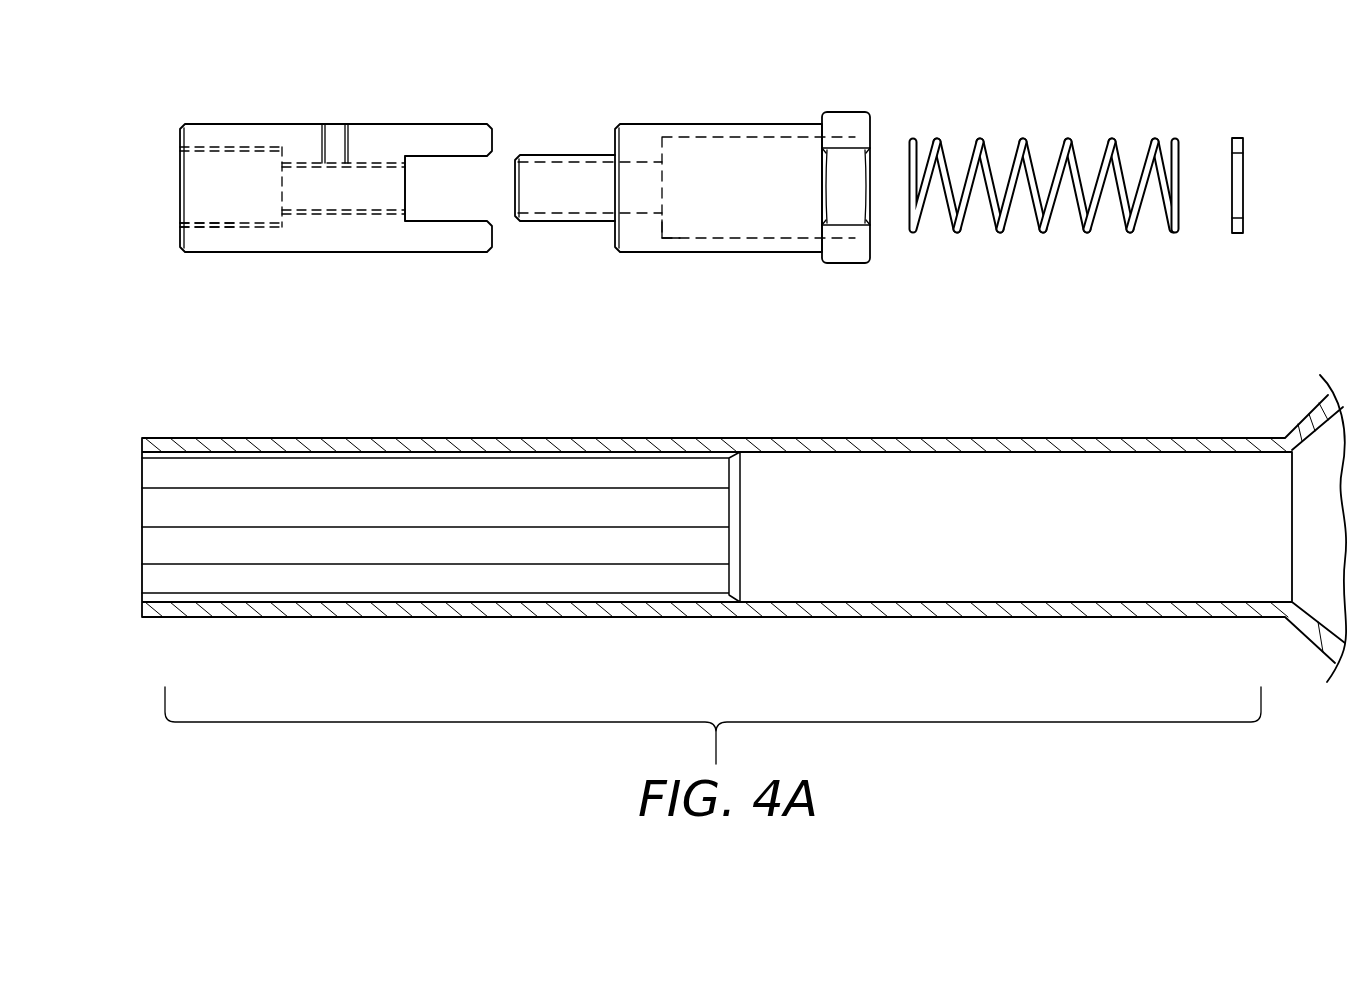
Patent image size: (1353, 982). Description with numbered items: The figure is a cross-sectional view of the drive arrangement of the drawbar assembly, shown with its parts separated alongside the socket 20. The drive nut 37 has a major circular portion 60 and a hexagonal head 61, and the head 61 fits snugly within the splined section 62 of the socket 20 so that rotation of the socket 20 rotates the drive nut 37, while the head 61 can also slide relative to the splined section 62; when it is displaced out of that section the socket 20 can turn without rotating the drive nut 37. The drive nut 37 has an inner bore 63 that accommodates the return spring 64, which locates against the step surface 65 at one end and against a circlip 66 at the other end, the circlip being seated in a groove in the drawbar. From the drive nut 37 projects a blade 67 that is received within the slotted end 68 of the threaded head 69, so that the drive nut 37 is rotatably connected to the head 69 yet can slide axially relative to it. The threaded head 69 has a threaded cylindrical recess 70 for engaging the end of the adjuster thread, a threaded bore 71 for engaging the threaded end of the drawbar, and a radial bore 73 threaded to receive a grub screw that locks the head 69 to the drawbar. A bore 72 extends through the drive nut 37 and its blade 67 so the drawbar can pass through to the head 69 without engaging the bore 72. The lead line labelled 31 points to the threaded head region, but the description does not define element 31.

The socket 20 is at (862, 435).
The bore 31 is at (210, 223).
The drive nut 37 is at (689, 196).
The major circular portion 60 is at (682, 122).
The hexagonal head 61 is at (853, 112).
The splined section 62 is at (438, 472).
The inner bore 63 is at (783, 160).
The return spring 64 is at (1063, 138).
The step surface 65 is at (663, 225).
The circlip 66 is at (1238, 138).
The blade 67 is at (602, 220).
The slotted end 68 is at (462, 210).
The threaded head 69 is at (250, 253).
The threaded cylindrical recess 70 is at (262, 175).
The threaded bore 71 is at (357, 197).
The bore 72 is at (595, 183).
The radial bore 73 is at (333, 138).